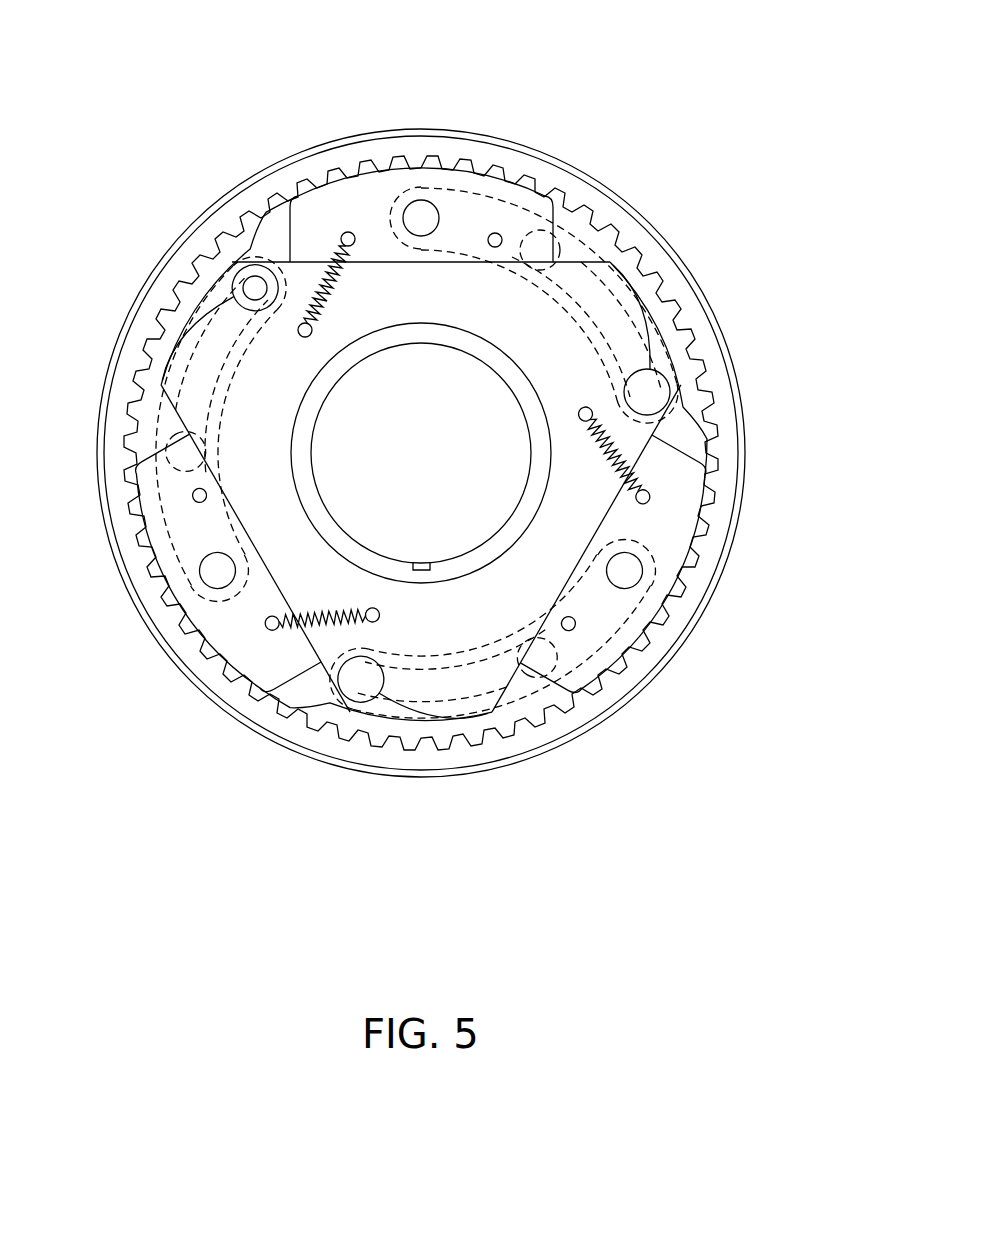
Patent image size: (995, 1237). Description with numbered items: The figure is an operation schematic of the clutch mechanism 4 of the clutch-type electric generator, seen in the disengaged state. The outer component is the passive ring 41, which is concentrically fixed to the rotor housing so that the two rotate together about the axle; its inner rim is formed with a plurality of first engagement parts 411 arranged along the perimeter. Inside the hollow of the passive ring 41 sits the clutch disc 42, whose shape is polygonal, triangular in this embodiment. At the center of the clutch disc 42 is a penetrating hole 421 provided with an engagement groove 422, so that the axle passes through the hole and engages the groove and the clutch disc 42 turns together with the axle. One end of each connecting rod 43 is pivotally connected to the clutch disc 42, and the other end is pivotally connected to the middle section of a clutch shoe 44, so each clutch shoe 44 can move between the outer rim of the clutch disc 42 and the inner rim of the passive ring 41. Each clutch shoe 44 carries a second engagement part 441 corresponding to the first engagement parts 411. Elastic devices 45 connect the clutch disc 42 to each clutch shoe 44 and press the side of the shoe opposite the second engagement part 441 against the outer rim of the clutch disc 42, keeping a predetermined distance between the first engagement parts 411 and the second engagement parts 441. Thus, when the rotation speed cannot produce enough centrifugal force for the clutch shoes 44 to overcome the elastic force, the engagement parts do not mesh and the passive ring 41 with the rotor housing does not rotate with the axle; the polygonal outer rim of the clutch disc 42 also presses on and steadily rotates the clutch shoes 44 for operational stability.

The clutch mechanism 4 is at (731, 78).
The passive ring 41 is at (166, 222).
The first engagement parts 411 is at (258, 208).
The clutch disc 42 is at (545, 570).
The penetrating hole 421 is at (360, 500).
The engagement groove 422 is at (420, 572).
The connecting rods 43 is at (652, 313).
The clutch shoes 44 is at (508, 198).
The second engagement part 441 is at (420, 170).
The elastic devices 45 is at (606, 434).